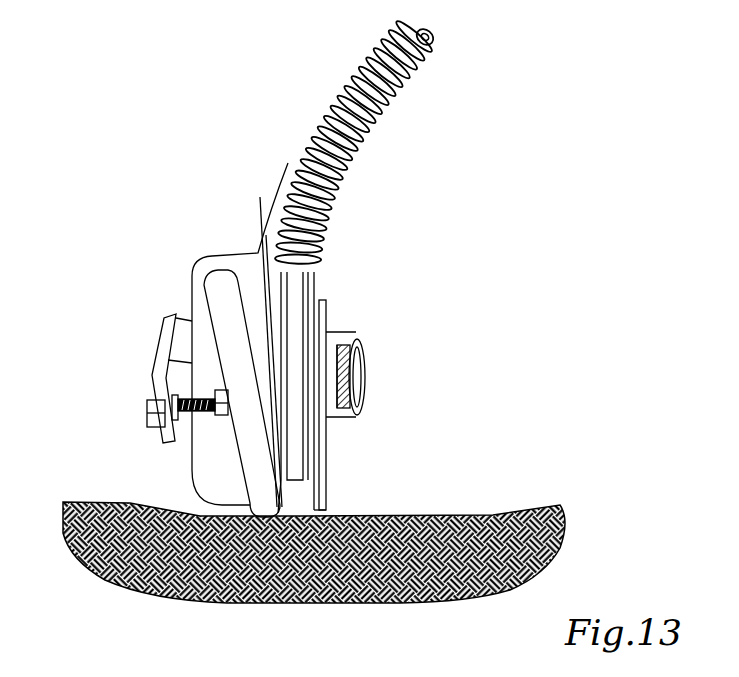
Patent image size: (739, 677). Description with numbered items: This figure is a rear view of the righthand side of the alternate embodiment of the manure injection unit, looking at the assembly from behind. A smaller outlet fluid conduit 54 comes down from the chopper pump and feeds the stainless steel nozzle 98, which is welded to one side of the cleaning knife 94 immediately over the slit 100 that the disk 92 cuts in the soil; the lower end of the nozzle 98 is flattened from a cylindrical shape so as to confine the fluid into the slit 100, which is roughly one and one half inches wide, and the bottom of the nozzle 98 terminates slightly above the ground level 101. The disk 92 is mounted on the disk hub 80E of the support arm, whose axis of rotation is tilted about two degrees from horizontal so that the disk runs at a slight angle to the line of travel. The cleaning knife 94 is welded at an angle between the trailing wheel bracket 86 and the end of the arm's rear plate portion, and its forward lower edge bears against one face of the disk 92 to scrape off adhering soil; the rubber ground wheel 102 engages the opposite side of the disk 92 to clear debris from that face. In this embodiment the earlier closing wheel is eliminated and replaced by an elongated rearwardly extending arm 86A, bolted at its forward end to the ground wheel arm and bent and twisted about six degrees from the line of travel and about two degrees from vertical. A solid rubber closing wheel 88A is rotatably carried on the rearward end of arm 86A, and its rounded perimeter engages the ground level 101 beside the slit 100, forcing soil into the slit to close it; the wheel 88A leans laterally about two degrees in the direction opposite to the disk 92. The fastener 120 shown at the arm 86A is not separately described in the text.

The outlet fluid conduit 54 is at (357, 75).
The disk 92 is at (312, 157).
The ground wheel 102 is at (213, 253).
The closing wheel 88A is at (212, 287).
The elongated rearwardly extending arm 86A is at (157, 373).
The clamp bolt 120 is at (148, 410).
The trailing wheel bracket 86 is at (338, 330).
The disk hub 80E is at (360, 342).
The nozzle 98 is at (300, 437).
The cleaning knife 94 is at (320, 462).
The slit 100 is at (332, 501).
The ground level 101 is at (497, 513).